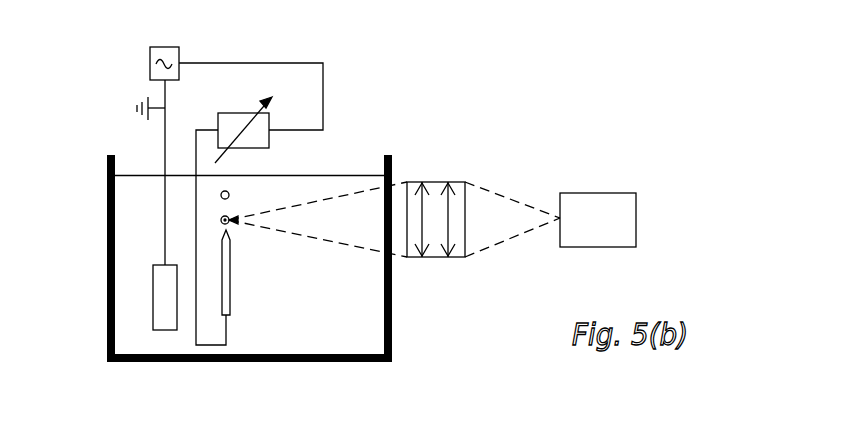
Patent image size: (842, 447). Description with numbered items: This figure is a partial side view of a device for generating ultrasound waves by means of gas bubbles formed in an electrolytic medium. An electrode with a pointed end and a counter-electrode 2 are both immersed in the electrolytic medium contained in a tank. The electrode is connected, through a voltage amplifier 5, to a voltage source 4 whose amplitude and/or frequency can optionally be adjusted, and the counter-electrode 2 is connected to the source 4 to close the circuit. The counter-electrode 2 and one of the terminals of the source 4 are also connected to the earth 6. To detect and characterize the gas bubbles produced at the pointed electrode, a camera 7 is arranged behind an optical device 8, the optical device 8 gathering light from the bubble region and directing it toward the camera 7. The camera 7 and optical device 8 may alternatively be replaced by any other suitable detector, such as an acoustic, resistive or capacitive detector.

The counter-electrode 2 is at (165, 340).
The voltage source 4 is at (172, 31).
The voltage amplifier 5 is at (238, 108).
The earth 6 is at (138, 93).
The camera 7 is at (595, 252).
The optical device 8 is at (438, 176).